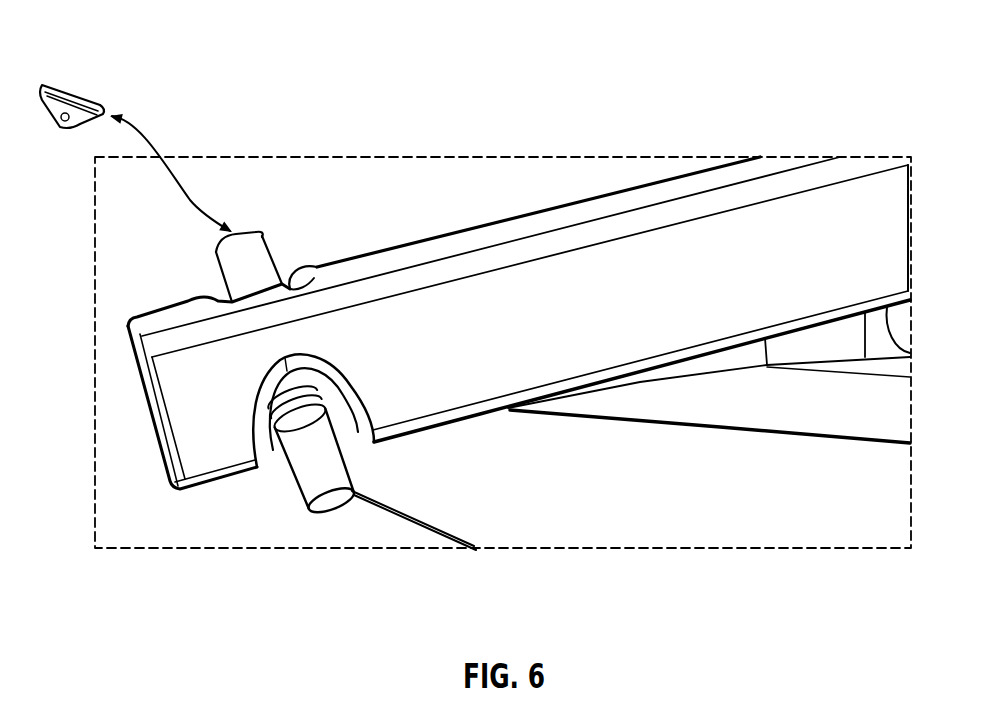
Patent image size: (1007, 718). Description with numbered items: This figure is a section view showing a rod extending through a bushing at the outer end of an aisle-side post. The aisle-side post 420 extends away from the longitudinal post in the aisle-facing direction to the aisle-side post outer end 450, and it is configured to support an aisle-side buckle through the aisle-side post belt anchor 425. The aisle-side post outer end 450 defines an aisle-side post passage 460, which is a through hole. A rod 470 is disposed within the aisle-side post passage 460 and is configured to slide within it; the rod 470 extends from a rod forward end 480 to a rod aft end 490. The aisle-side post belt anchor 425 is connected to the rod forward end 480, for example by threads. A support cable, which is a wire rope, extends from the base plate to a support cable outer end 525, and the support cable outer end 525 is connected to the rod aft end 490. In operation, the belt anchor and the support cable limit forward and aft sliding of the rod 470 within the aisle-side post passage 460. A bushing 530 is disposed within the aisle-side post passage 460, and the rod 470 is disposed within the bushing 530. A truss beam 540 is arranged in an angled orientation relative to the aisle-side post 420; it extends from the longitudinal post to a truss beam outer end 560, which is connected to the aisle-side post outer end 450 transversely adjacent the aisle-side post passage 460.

The aisle-side post 420 is at (748, 197).
The aisle-side post belt anchor 425 is at (45, 83).
The aisle-side post outer end 450 is at (356, 257).
The aisle-side post passage 460 is at (289, 283).
The rod 470 is at (236, 232).
The rod forward end 480 is at (216, 250).
The rod aft end 490 is at (330, 503).
The support cable outer end 525 is at (423, 523).
The bushing 530 is at (293, 383).
The truss beam 540 is at (670, 390).
The truss beam outer end 560 is at (547, 413).